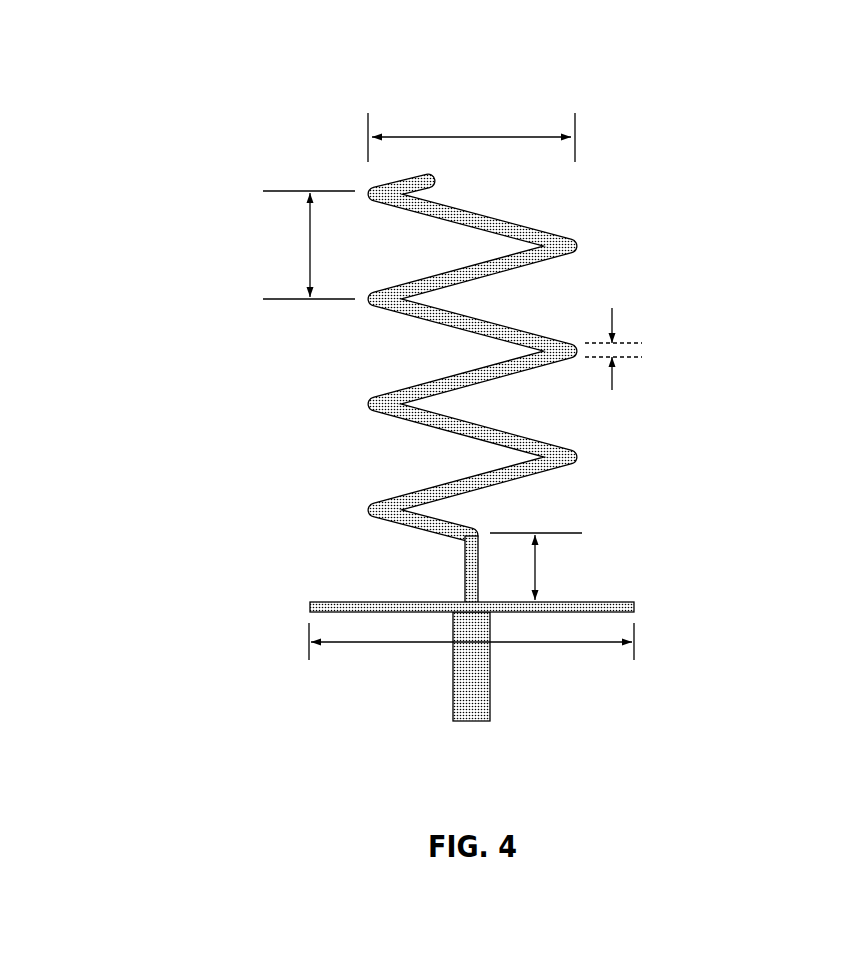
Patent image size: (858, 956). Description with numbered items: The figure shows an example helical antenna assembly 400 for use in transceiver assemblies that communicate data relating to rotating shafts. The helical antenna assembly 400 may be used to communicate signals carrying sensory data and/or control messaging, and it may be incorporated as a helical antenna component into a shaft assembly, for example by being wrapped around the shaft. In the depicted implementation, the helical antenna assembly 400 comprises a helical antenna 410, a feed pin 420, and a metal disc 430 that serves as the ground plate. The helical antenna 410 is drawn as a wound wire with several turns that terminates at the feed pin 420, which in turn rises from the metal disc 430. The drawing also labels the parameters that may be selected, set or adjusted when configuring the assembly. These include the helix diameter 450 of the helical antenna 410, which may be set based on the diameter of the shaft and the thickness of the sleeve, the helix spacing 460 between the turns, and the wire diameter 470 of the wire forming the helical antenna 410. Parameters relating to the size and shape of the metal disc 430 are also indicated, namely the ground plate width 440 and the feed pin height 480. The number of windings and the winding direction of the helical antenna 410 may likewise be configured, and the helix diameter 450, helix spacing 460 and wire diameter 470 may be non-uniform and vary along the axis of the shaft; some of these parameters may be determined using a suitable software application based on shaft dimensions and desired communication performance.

The helical antenna assembly 400 is at (245, 115).
The helical antenna 410 is at (582, 233).
The feed pin 420 is at (473, 573).
The metal disc 430 is at (310, 608).
The ground plate width 440 is at (668, 724).
The helix diameter 450 is at (488, 112).
The helix spacing 460 is at (200, 274).
The wire diameter 470 is at (748, 382).
The feed pin height 480 is at (693, 572).